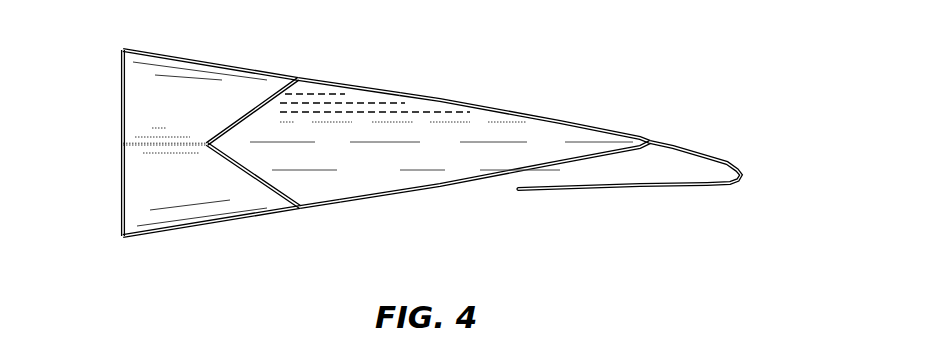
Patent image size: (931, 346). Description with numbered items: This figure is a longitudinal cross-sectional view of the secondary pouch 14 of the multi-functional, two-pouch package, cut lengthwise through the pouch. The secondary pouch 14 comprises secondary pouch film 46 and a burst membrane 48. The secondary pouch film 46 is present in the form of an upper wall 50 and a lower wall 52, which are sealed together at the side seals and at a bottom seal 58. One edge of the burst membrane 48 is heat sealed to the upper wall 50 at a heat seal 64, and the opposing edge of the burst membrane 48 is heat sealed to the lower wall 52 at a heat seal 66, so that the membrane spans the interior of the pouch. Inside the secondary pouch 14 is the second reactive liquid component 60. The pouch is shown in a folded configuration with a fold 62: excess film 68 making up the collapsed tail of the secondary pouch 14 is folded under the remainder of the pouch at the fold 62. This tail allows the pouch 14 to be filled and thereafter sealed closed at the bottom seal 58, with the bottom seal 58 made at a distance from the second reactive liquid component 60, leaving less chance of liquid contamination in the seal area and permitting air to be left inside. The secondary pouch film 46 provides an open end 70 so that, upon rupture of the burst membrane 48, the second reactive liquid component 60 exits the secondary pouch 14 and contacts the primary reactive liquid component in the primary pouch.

The secondary pouch 14 is at (437, 153).
The secondary pouch film 46 is at (153, 51).
The burst membrane 48 is at (265, 98).
The upper wall 50 is at (367, 87).
The lower wall 52 is at (367, 201).
The bottom seal 58 is at (532, 195).
The second reactive liquid component 60 is at (418, 162).
The fold 62 is at (745, 174).
The heat seal 64 is at (300, 78).
The heat seal 66 is at (312, 199).
The excess film 68 is at (632, 190).
The open end 70 is at (122, 190).